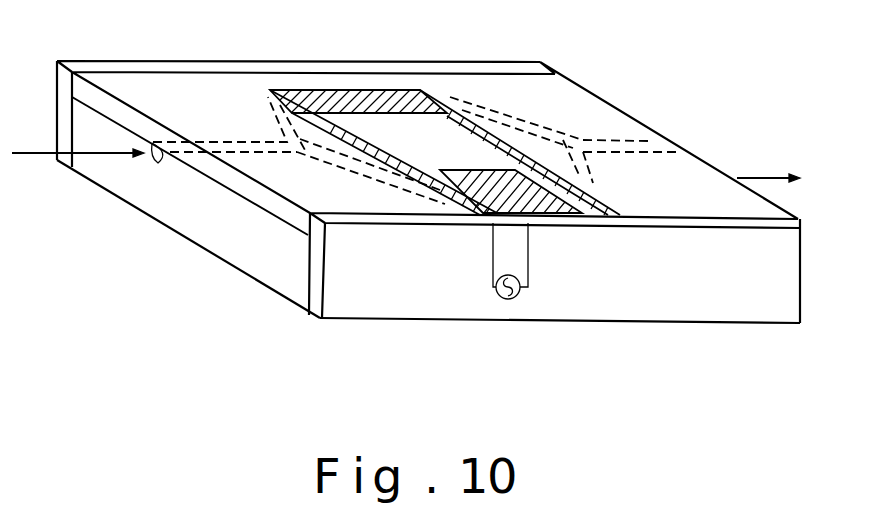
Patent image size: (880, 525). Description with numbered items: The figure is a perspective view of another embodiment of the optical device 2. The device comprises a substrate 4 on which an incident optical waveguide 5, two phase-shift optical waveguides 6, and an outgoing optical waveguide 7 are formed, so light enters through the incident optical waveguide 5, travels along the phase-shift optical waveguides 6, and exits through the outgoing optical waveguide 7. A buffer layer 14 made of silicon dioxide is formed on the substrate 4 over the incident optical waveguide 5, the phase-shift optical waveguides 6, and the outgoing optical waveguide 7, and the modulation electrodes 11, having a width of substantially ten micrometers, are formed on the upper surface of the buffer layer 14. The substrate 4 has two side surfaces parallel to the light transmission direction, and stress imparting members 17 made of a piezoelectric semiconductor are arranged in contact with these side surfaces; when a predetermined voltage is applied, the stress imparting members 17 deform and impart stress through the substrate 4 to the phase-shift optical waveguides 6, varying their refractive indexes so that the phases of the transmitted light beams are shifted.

The optical device 2 is at (606, 60).
The substrate 4 is at (227, 243).
The incident optical waveguide 5 is at (233, 143).
The phase-shift optical waveguides 6 is at (478, 106).
The outgoing optical waveguide 7 is at (646, 148).
The modulation electrodes 11 is at (375, 88).
The buffer layer 14 is at (277, 203).
The stress imparting members 17 is at (57, 88).